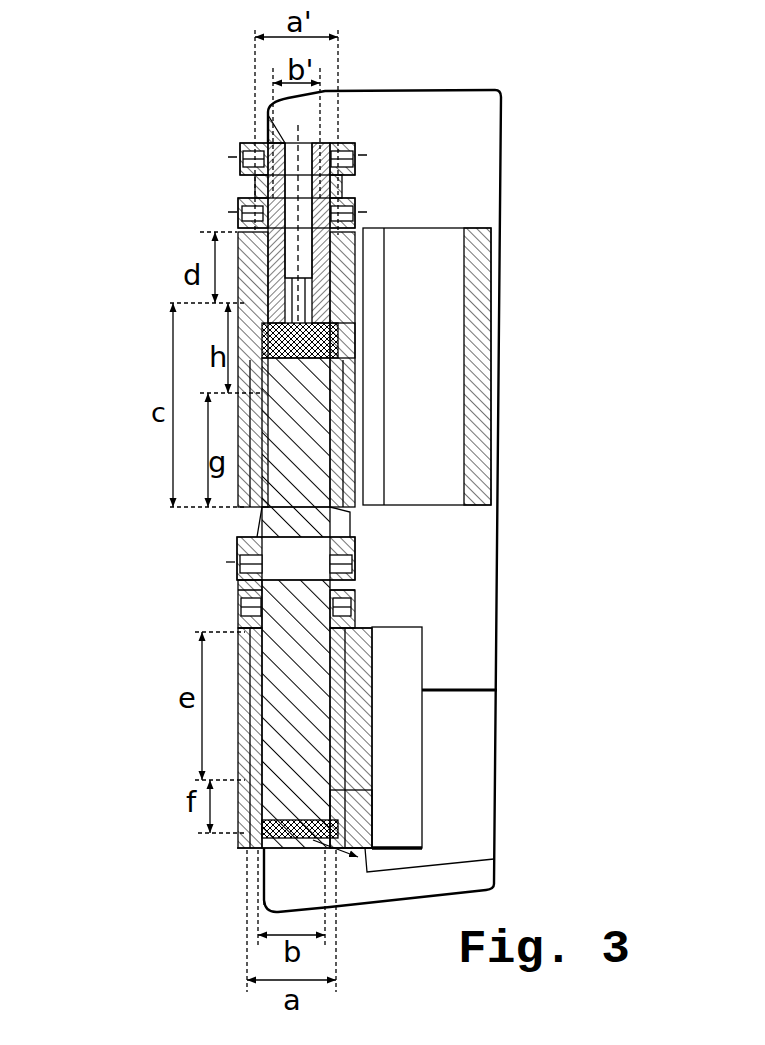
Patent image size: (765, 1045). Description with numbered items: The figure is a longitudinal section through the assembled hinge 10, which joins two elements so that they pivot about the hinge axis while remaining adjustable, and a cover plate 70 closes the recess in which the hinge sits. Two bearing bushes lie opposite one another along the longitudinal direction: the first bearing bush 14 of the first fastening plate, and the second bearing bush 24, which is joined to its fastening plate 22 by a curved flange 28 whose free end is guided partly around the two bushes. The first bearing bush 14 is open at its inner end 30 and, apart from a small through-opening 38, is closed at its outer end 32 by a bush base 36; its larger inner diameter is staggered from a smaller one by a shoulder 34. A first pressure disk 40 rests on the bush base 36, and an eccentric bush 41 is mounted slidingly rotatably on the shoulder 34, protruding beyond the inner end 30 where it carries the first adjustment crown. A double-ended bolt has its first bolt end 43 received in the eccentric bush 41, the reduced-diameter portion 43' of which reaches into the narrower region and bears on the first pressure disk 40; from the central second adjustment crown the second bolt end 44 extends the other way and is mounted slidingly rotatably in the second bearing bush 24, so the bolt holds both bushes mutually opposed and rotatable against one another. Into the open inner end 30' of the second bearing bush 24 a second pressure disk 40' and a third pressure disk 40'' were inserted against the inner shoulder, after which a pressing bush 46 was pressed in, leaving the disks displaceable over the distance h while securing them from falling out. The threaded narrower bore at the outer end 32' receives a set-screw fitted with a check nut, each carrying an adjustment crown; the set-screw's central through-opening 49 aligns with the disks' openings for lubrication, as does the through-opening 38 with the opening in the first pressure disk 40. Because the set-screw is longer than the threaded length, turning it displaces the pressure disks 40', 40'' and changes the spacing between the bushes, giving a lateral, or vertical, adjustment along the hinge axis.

The hinge 10 is at (142, 328).
The cover plate 70 is at (475, 160).
The central through-opening 49 is at (262, 122).
The second bearing bush 24 is at (372, 228).
The outer end of second bearing bush 32' is at (486, 181).
The curved flange 28 is at (470, 250).
The second fastening plate 22 is at (433, 468).
The third pressure disk 40'' is at (426, 309).
The second pressure disk 40' is at (481, 324).
The second bolt end 44 is at (322, 400).
The bearing bush/pressing bush 46 is at (355, 432).
The inner end of second bearing bush 30' is at (469, 506).
The inner end of first bearing bush 30 is at (516, 714).
The first bearing bush 14 is at (395, 692).
The eccentric bush 41 is at (340, 718).
The first bolt end 43 is at (452, 738).
The shoulder 34 is at (300, 768).
The portion of smaller diameter 43' is at (491, 811).
The first pressure disk 40 is at (421, 814).
The outer end of first bearing bush 32 is at (528, 873).
The bush base 36 is at (342, 852).
The through-opening 38 is at (265, 862).